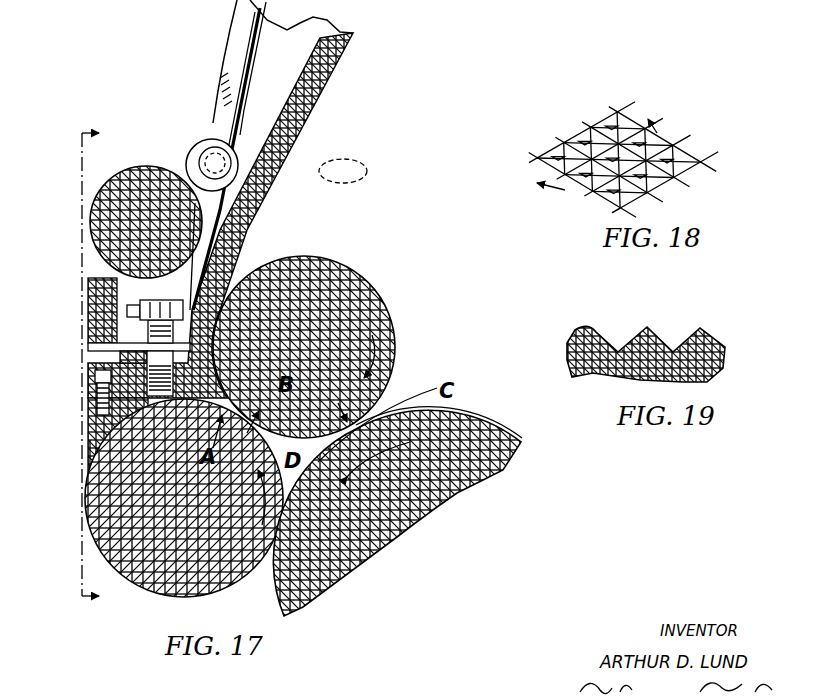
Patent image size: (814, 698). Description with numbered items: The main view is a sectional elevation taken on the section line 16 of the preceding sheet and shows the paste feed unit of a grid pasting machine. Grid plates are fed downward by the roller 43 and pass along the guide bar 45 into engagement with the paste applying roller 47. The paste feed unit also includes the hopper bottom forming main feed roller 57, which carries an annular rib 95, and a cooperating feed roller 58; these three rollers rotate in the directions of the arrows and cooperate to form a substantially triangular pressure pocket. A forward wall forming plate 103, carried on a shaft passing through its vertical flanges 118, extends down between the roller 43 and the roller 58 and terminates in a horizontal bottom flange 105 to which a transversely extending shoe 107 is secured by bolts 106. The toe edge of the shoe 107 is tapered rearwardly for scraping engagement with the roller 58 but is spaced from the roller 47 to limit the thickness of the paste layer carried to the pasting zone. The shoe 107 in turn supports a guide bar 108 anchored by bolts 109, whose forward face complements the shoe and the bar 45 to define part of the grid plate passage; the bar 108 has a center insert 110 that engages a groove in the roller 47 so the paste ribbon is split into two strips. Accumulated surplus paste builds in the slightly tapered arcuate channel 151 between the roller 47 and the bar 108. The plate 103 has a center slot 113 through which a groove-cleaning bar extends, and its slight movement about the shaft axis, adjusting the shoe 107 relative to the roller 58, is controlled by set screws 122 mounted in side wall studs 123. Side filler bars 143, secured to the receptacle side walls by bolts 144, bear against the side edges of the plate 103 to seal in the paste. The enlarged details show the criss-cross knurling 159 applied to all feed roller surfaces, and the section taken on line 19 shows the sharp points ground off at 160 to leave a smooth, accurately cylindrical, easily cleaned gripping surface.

In FIG. 17, the section line 16 is at (86, 365).
In FIG. 17, the roller 43 is at (140, 180).
In FIG. 17, the paste applying roller 47 is at (147, 582).
In FIG. 17, the cooperating feed roller 58 is at (384, 331).
In FIG. 17, the main feed roller 57 is at (394, 532).
In FIG. 17, the annular rib 95 is at (476, 422).
In FIG. 17, the forward wall forming plate 103 is at (300, 105).
In FIG. 17, the vertical flanges 118 is at (262, 80).
In FIG. 17, the bolts 144 is at (215, 163).
In FIG. 17, the side filler bars 143 is at (347, 43).
In FIG. 17, the center slot 113 is at (272, 184).
In FIG. 17, the set screws 122 is at (125, 305).
In FIG. 17, the side wall studs 123 is at (161, 317).
In FIG. 17, the guide bar 45 is at (92, 317).
In FIG. 17, the bolts 106 is at (123, 347).
In FIG. 17, the horizontal bottom flange 105 is at (123, 358).
In FIG. 17, the shoe 107 is at (92, 387).
In FIG. 17, the bolts 109 is at (93, 412).
In FIG. 17, the guide bar 108 is at (93, 438).
In FIG. 17, the center insert 110 is at (92, 460).
In FIG. 17, the arcuate channel 151 is at (95, 473).
In FIG. 18, the knurling 159 is at (623, 134).
In FIG. 18, the ground off points 160 is at (648, 175).
In FIG. 19, the ground off points 160 is at (700, 328).
In FIG. 18, the section line 19 is at (612, 167).